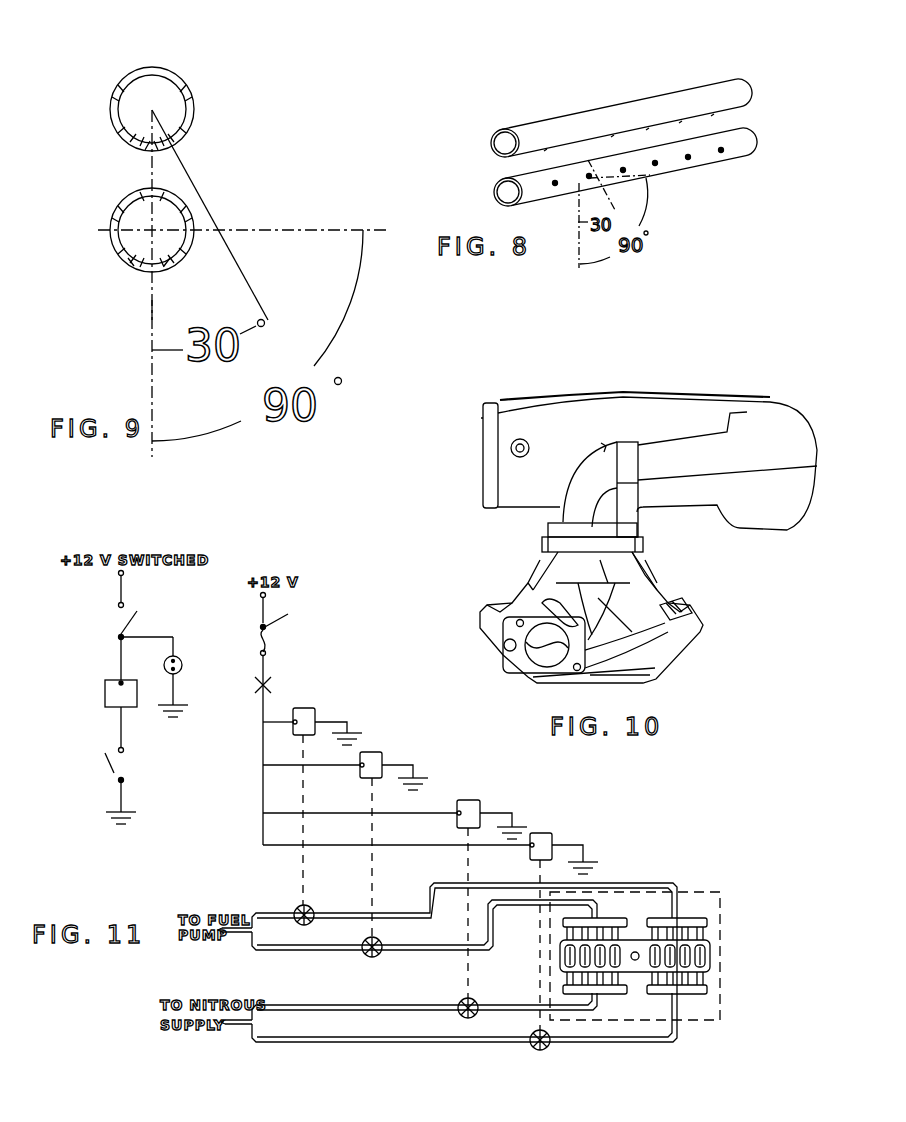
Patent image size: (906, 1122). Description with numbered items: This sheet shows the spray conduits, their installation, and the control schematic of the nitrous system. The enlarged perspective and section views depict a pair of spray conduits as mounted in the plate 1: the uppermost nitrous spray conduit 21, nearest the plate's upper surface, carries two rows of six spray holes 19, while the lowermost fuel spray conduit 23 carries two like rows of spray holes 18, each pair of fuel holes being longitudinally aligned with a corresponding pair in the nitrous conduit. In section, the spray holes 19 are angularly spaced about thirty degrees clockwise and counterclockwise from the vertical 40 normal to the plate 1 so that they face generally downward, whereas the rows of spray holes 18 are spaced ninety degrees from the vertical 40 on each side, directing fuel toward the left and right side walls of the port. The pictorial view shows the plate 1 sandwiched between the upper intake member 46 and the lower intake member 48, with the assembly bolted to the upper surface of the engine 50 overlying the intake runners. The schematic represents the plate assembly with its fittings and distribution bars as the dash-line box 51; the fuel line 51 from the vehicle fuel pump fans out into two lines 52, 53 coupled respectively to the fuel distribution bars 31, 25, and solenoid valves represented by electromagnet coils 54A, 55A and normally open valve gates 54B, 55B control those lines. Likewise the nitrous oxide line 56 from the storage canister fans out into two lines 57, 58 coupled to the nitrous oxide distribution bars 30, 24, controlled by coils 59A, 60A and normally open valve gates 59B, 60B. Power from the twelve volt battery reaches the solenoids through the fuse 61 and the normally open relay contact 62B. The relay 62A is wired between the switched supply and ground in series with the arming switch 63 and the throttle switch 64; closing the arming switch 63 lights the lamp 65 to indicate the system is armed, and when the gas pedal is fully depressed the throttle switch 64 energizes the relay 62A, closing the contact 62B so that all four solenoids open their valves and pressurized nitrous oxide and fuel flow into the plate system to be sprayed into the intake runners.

In FIG. 10, the plate 1 is at (565, 544).
In FIG. 9, the spray holes 18 is at (168, 230).
In FIG. 8, the spray holes 18 is at (625, 214).
In FIG. 9, the spray holes 19 is at (155, 162).
In FIG. 8, the spray holes 19 is at (610, 113).
In FIG. 9, the nitrous spray conduit 21 is at (128, 89).
In FIG. 8, the nitrous spray conduit 21 is at (621, 99).
In FIG. 9, the fuel spray conduit 23 is at (114, 296).
In FIG. 8, the fuel spray conduit 23 is at (641, 201).
In FIG. 11, the nitrous oxide distribution bar 24 is at (694, 1024).
In FIG. 11, the fuel distribution bar 25 is at (703, 897).
In FIG. 11, the nitrous oxide distribution bar 30 is at (613, 1032).
In FIG. 11, the fuel distribution bar 31 is at (621, 897).
In FIG. 9, the vertical 40 is at (117, 344).
In FIG. 10, the upper intake member 46 is at (649, 477).
In FIG. 10, the lower intake member 48 is at (703, 593).
In FIG. 10, the engine 50 is at (598, 617).
In FIG. 11, the nitrous plate assembly 51 is at (762, 950).
In FIG. 11, the fuel line 52 is at (464, 953).
In FIG. 11, the fuel line 53 is at (393, 943).
In FIG. 11, the electromagnet coil 54A is at (337, 721).
In FIG. 11, the normally open valve gate 54B is at (327, 898).
In FIG. 11, the electromagnet coil 55A is at (367, 763).
In FIG. 11, the normally open valve gate 55B is at (393, 964).
In FIG. 11, the nitrous oxide line 56 is at (221, 1053).
In FIG. 11, the nitrous oxide line 57 is at (424, 991).
In FIG. 11, the nitrous oxide line 58 is at (464, 1043).
In FIG. 11, the solenoid coil 59A is at (420, 812).
In FIG. 11, the normally open valve gate 59B is at (491, 992).
In FIG. 11, the solenoid coil 60A is at (457, 847).
In FIG. 11, the normally open valve gate 60B is at (512, 1064).
In FIG. 11, the fuse 61 is at (301, 627).
In FIG. 11, the relay 62A is at (96, 674).
In FIG. 11, the relay contact 62B is at (300, 674).
In FIG. 11, the arming switch 63 is at (108, 617).
In FIG. 11, the throttle switch 64 is at (102, 778).
In FIG. 11, the lamp 65 is at (199, 648).